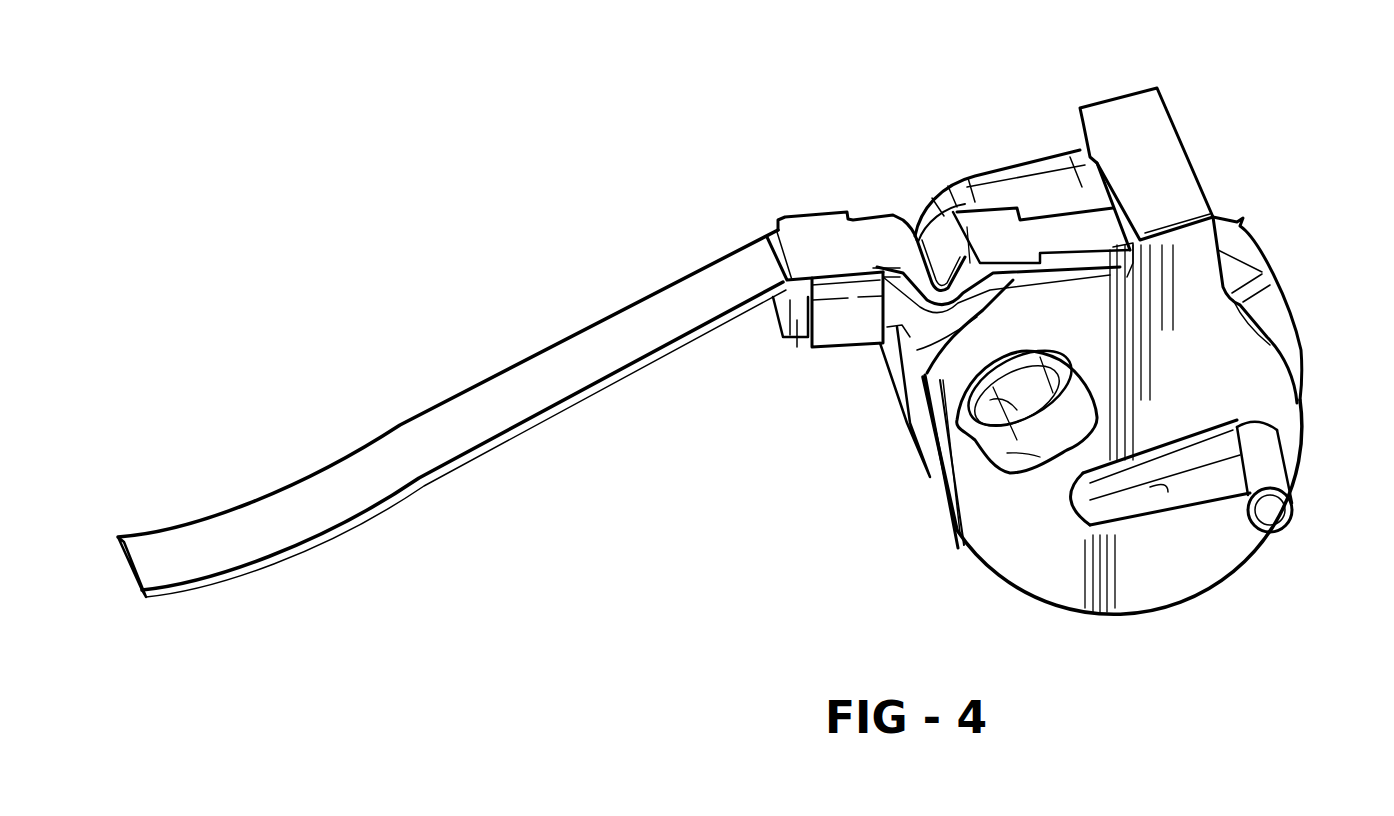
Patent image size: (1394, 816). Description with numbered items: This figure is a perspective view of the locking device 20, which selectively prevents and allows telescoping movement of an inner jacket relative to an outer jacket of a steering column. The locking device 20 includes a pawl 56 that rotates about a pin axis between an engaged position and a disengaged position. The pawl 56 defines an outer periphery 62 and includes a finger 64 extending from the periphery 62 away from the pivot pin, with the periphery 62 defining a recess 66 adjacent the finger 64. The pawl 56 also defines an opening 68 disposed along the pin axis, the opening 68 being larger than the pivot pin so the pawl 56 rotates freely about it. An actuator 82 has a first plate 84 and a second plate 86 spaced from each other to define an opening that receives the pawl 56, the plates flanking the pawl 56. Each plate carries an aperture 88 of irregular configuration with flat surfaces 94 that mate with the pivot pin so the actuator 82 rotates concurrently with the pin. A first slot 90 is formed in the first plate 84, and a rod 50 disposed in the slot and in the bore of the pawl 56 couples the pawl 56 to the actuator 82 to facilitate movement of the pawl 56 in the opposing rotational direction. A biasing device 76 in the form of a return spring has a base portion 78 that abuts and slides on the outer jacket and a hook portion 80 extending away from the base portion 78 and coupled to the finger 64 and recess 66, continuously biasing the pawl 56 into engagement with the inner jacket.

The locking device 20 is at (707, 558).
The rod 50 is at (1272, 513).
The pawl 56 is at (1260, 247).
The outer periphery 62 is at (1273, 285).
The finger 64 is at (800, 337).
The recess 66 is at (930, 305).
The opening 68 is at (1040, 422).
The biasing device 76 is at (477, 407).
The base portion 78 is at (150, 550).
The hook portion 80 is at (830, 242).
The actuator 82 is at (1147, 150).
The first plate 84 is at (1168, 585).
The second plate 86 is at (1062, 207).
The aperture 88 is at (1053, 427).
The first slot 90 is at (1147, 493).
The flat surfaces 94 is at (1067, 453).